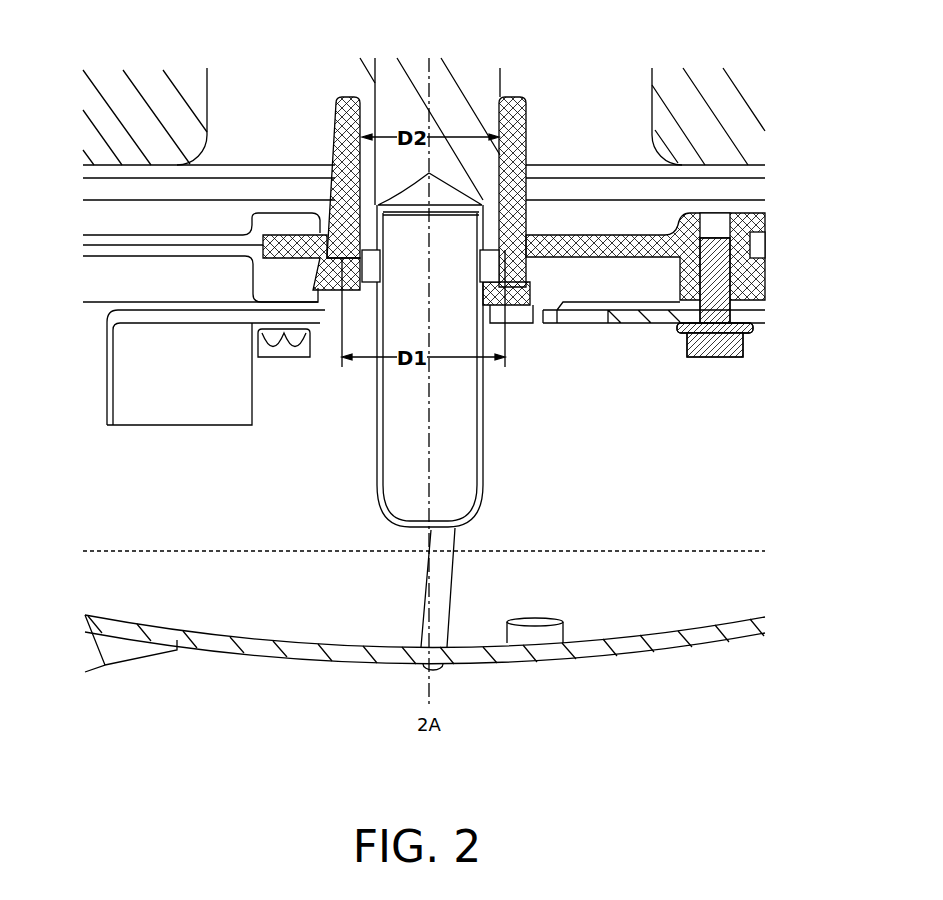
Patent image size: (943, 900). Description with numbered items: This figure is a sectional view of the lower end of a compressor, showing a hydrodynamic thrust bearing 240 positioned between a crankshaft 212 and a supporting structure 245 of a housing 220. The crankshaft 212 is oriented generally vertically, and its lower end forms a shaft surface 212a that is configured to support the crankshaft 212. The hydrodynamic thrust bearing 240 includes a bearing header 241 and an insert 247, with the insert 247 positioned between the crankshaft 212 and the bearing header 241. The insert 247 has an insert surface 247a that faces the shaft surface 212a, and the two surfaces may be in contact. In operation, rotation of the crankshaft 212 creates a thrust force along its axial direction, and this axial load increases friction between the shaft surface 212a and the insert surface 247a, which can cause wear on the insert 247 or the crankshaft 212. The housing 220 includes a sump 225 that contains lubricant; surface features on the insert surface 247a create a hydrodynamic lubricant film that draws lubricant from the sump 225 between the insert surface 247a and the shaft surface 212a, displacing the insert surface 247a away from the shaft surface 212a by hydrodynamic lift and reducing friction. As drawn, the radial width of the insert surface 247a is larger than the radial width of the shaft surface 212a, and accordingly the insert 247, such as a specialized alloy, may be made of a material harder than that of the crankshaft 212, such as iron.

The crankshaft 212 is at (455, 110).
The shaft surface 212a is at (527, 232).
The hydrodynamic thrust bearing 240 is at (527, 137).
The bearing header 241 is at (529, 306).
The supporting structure 245 is at (625, 253).
The insert 247 is at (340, 292).
The insert surface 247a is at (318, 273).
The housing 220 is at (583, 661).
The sump 225 is at (318, 603).